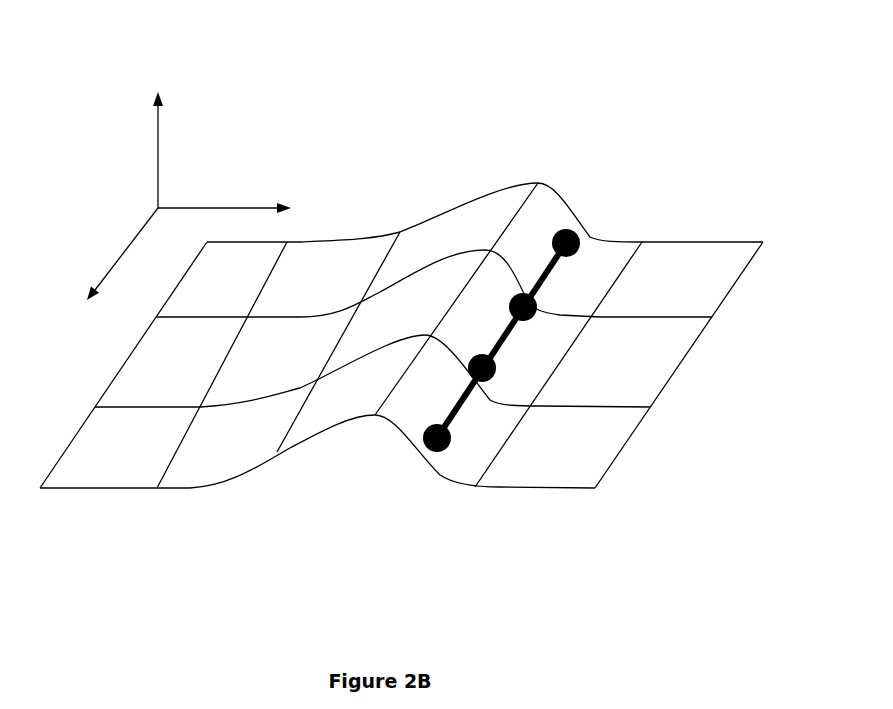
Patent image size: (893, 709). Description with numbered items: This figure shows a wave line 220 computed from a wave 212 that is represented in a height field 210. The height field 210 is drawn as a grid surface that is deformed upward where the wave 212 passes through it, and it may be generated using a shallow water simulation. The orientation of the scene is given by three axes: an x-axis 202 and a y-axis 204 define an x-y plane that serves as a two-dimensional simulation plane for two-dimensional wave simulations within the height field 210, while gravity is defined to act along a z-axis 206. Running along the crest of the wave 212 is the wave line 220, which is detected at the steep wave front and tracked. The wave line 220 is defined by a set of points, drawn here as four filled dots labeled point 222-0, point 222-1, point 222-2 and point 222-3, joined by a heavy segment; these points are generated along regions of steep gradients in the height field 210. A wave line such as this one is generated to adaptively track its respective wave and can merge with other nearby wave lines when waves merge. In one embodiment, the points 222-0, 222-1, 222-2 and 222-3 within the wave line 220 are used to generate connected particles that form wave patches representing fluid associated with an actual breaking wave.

The x-axis 202 is at (95, 277).
The y-axis 204 is at (254, 205).
The z-axis 206 is at (155, 127).
The height field 210 is at (225, 480).
The wave 212 is at (565, 200).
The wave line 220 is at (457, 412).
The point 222-0 is at (443, 455).
The point 222-1 is at (495, 374).
The point 222-2 is at (540, 311).
The point 222-3 is at (580, 238).